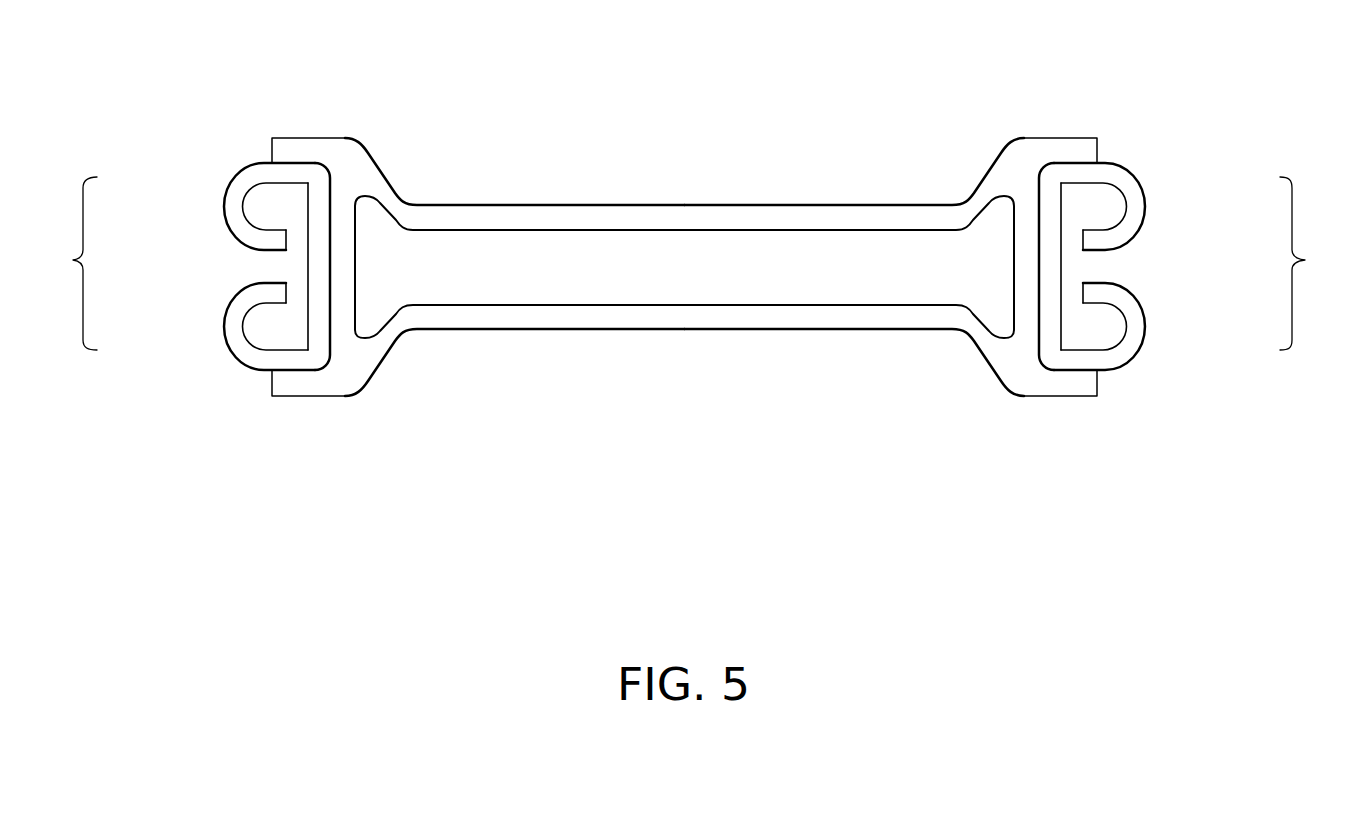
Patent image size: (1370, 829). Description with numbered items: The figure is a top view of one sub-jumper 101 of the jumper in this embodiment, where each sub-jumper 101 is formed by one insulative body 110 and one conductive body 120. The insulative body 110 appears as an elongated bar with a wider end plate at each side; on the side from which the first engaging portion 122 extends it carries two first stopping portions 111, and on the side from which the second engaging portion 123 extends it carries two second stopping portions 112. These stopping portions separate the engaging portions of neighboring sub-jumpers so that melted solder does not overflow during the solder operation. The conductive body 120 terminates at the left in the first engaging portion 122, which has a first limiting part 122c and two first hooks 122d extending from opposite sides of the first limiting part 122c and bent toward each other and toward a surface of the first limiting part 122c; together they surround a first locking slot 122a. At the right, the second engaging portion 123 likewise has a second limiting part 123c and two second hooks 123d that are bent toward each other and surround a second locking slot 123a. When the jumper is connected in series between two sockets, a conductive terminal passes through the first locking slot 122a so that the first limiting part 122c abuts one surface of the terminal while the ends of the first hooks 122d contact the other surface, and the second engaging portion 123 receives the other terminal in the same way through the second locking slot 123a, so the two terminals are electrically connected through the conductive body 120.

The sub-jumper 101 is at (1168, 500).
The insulative body 110 is at (705, 218).
The first stopping portion 111 is at (323, 148).
The second stopping portion 112 is at (1058, 148).
The conductive body 120 is at (180, 225).
The first engaging portion 122 is at (63, 263).
The first locking slot 122a is at (290, 272).
The first limiting part 122c is at (318, 267).
The first hooks 122d is at (233, 202).
The second engaging portion 123 is at (1193, 266).
The second locking slot 123a is at (1080, 272).
The second limiting part 123c is at (1050, 268).
The second hooks 123d is at (1137, 207).